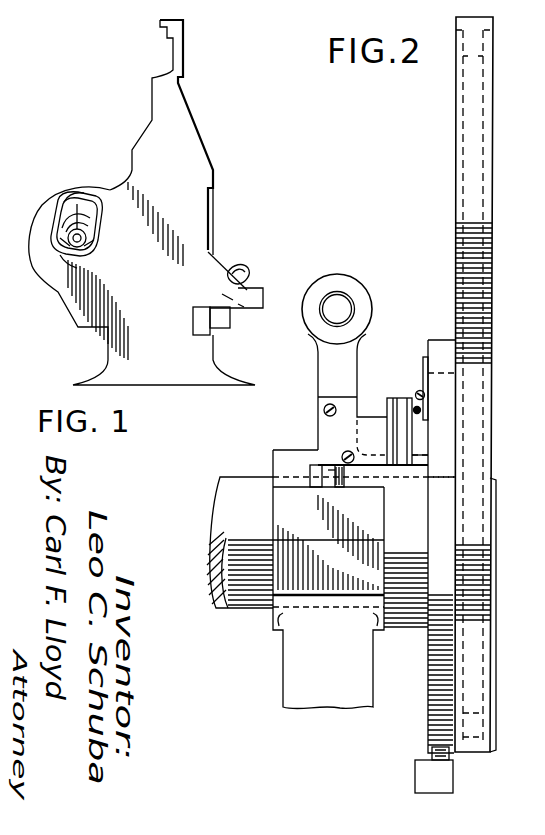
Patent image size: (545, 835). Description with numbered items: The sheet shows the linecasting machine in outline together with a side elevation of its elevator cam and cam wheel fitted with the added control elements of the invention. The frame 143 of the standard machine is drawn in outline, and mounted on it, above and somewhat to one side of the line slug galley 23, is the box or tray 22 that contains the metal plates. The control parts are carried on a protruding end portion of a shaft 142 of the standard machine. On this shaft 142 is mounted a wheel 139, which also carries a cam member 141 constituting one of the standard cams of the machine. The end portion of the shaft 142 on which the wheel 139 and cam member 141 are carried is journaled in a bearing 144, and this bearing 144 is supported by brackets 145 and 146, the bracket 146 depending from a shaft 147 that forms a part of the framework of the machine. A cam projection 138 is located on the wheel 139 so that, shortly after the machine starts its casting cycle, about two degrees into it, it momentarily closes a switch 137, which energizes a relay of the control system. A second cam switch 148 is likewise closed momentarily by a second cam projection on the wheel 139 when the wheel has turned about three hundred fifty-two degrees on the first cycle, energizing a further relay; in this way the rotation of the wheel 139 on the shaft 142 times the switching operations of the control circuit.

In FIG. 1, the box or tray 22 is at (250, 268).
In FIG. 1, the line slug galley 23 is at (242, 298).
In FIG. 2, the switch 137 is at (414, 757).
In FIG. 2, the cam projection 138 is at (432, 750).
In FIG. 1, the wheel 139 is at (80, 212).
In FIG. 2, the wheel 139 is at (437, 683).
In FIG. 1, the cam member 141 is at (100, 227).
In FIG. 2, the cam member 141 is at (492, 245).
In FIG. 1, the shaft 142 is at (70, 258).
In FIG. 2, the shaft 142 is at (233, 490).
In FIG. 1, the frame 143 is at (193, 175).
In FIG. 2, the bearing 144 is at (288, 444).
In FIG. 2, the bracket 145 is at (292, 660).
In FIG. 2, the bracket 146 is at (352, 358).
In FIG. 2, the shaft 147 is at (338, 312).
In FIG. 2, the second cam switch 148 is at (412, 390).